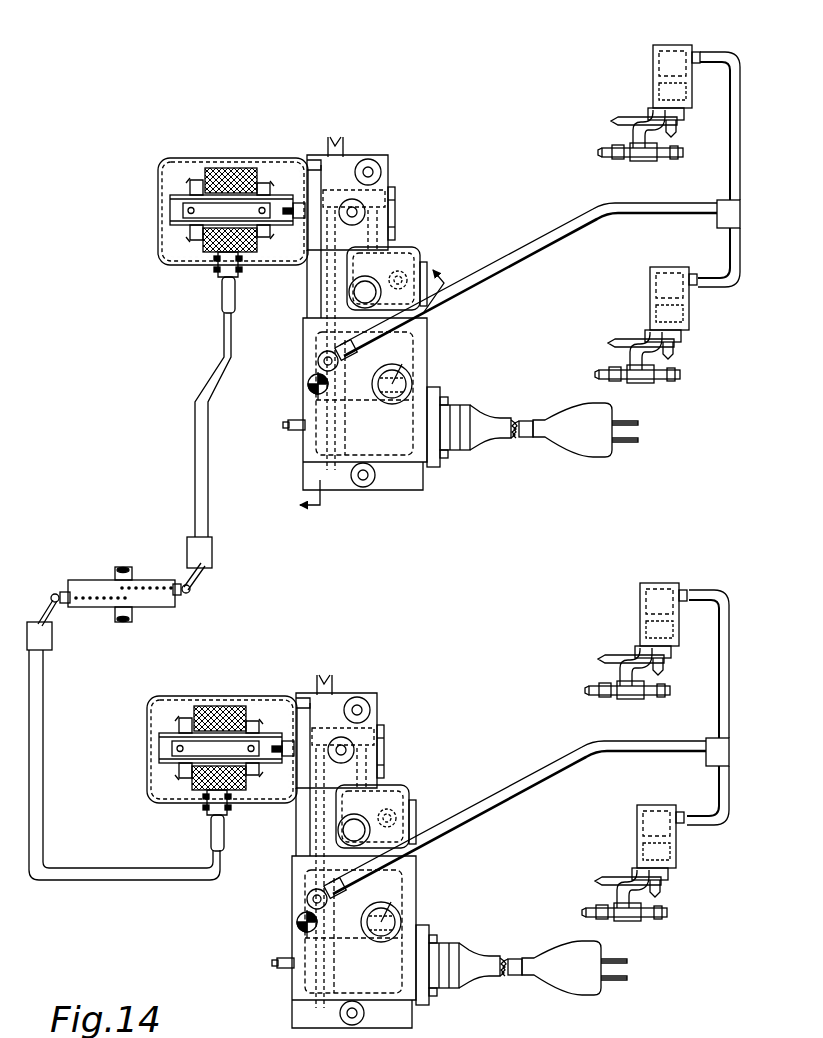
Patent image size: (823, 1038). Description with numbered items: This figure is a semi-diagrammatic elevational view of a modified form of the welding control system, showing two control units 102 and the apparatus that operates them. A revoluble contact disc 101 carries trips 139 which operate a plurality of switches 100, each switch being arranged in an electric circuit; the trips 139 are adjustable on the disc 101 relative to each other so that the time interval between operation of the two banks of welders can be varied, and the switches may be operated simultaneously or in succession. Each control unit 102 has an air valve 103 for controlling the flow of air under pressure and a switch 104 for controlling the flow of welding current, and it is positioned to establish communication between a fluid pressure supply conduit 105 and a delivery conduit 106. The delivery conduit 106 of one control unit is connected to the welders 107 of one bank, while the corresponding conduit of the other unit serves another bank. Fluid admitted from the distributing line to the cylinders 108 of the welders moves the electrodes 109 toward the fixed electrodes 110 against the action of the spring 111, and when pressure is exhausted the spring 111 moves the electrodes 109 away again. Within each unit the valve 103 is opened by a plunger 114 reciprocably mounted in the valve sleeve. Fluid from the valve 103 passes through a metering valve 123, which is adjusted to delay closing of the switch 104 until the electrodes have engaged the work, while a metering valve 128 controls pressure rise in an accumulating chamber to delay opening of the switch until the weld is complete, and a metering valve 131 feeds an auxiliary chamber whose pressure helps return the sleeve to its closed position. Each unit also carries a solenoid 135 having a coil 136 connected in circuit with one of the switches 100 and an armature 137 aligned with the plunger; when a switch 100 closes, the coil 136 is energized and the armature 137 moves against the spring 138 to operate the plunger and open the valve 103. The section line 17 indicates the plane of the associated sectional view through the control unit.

The section line 17- 17 is at (364, 381).
The switch 100 is at (212, 552).
The revoluble contact disc 101 is at (88, 580).
The control unit 102 is at (437, 324).
The air valve 103 is at (392, 184).
The switch 104 is at (432, 397).
The fluid pressure supply conduit 105 is at (344, 150).
The delivery conduit 106 is at (505, 256).
The welder 107 is at (634, 74).
The cylinder 108 is at (680, 46).
The electrode 109 is at (676, 136).
The fixed electrode 110 is at (670, 154).
The spring 111 is at (650, 88).
The plunger 114 is at (300, 207).
The metering valve 123 is at (300, 386).
The metering valve 128 is at (428, 372).
The metering valve 131 is at (400, 258).
The solenoid 135 is at (248, 167).
The coil 136 is at (222, 172).
The armature 137 is at (283, 226).
The spring 138 is at (203, 185).
The trip 139 is at (62, 594).